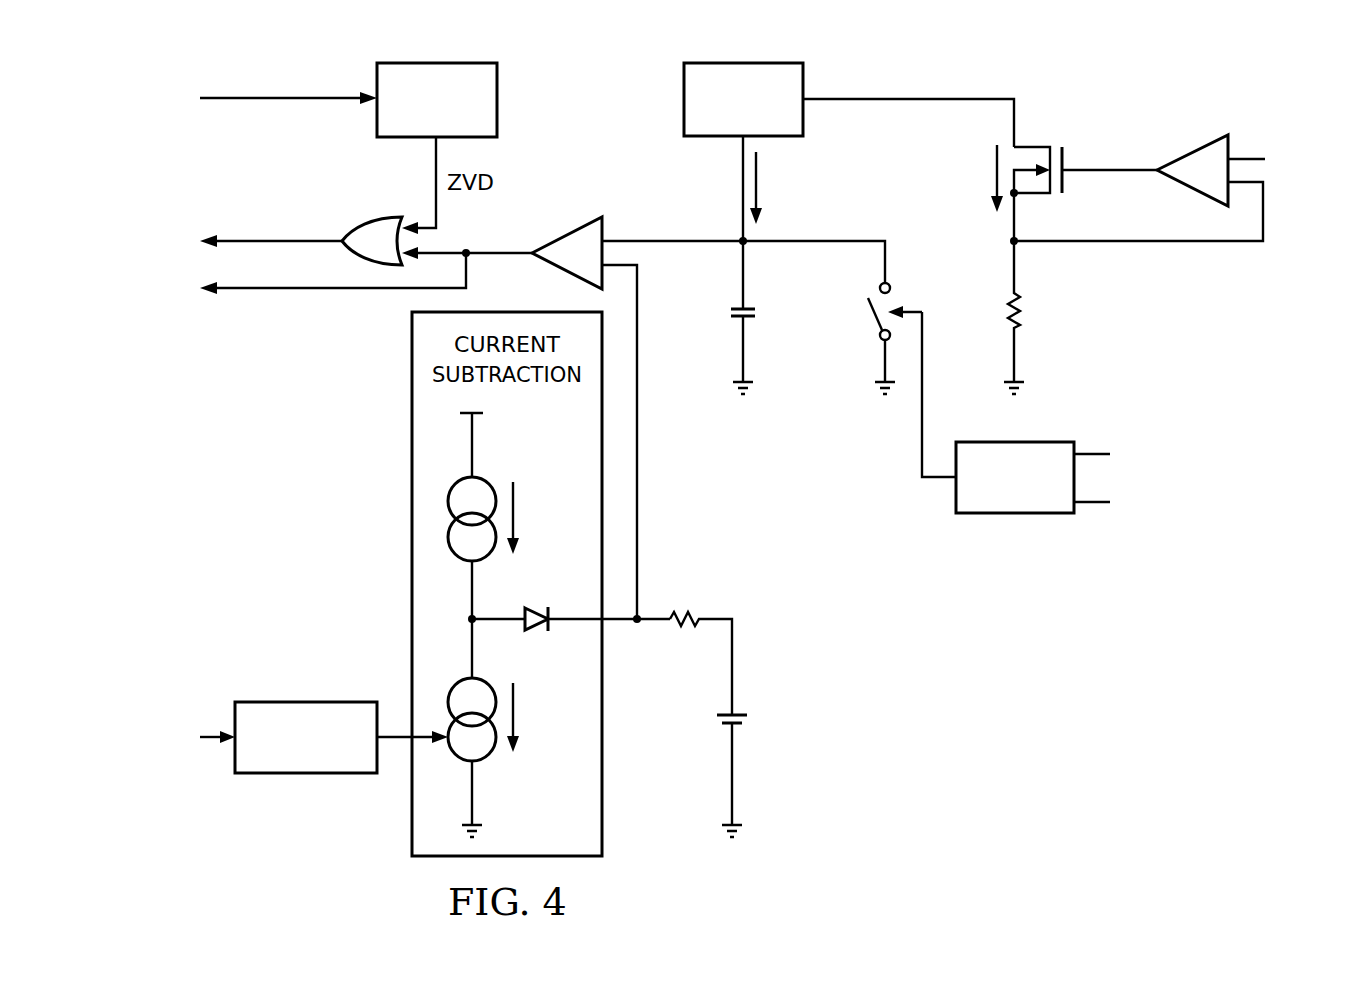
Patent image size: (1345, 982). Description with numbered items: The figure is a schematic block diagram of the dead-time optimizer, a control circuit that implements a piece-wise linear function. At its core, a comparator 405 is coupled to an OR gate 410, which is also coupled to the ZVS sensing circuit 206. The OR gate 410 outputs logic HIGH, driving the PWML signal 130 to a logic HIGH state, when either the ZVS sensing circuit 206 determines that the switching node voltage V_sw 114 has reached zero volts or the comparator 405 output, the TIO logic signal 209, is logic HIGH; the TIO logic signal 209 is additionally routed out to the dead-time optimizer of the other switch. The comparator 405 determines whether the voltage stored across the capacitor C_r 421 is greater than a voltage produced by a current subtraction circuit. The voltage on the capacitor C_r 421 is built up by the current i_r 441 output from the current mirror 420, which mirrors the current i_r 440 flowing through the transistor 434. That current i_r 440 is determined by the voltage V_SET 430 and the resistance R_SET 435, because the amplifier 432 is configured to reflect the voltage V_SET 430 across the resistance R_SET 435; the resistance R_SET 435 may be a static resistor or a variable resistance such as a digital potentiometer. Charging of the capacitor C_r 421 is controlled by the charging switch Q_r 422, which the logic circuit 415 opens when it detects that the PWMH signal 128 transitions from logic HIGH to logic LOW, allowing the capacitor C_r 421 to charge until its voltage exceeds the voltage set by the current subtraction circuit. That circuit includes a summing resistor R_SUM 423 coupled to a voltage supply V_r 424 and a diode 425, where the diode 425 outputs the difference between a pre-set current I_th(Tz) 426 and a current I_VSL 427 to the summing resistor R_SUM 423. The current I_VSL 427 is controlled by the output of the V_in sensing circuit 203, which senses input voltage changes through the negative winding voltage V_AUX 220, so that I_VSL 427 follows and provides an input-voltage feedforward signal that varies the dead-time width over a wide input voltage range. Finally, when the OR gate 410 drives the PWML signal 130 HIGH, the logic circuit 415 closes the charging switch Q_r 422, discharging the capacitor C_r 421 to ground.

The switching node voltage V_sw 114 is at (288, 98).
The ZVS sensing circuit 206 is at (425, 62).
The OR gate 410 is at (378, 215).
The TIO logic signal 209 is at (335, 300).
The comparator 405 is at (567, 232).
The current mirror 420 is at (732, 62).
The current i_r (mirror output) 441 is at (757, 162).
The current i_r (through transistor) 440 is at (997, 150).
The transistor 434 is at (1064, 155).
The amplifier 432 is at (1193, 147).
The voltage V_SET 430 is at (1247, 157).
The resistance R_SET 435 is at (1022, 307).
The capacitor C_r 421 is at (730, 312).
The charging switch Q_r 422 is at (871, 325).
The logic circuit 415 is at (1013, 514).
The PWMH signal 128 is at (1090, 452).
The PWML signal 130 is at (1090, 505).
The pre-set current I_th(Tz) 426 is at (482, 477).
The diode 425 is at (538, 632).
The current I_VSL 427 is at (515, 738).
The summing resistor R_SUM 423 is at (683, 628).
The voltage supply V_r 424 is at (718, 722).
The negative winding voltage V_AUX 220 is at (212, 740).
The V_in sensing circuit 203 is at (305, 774).